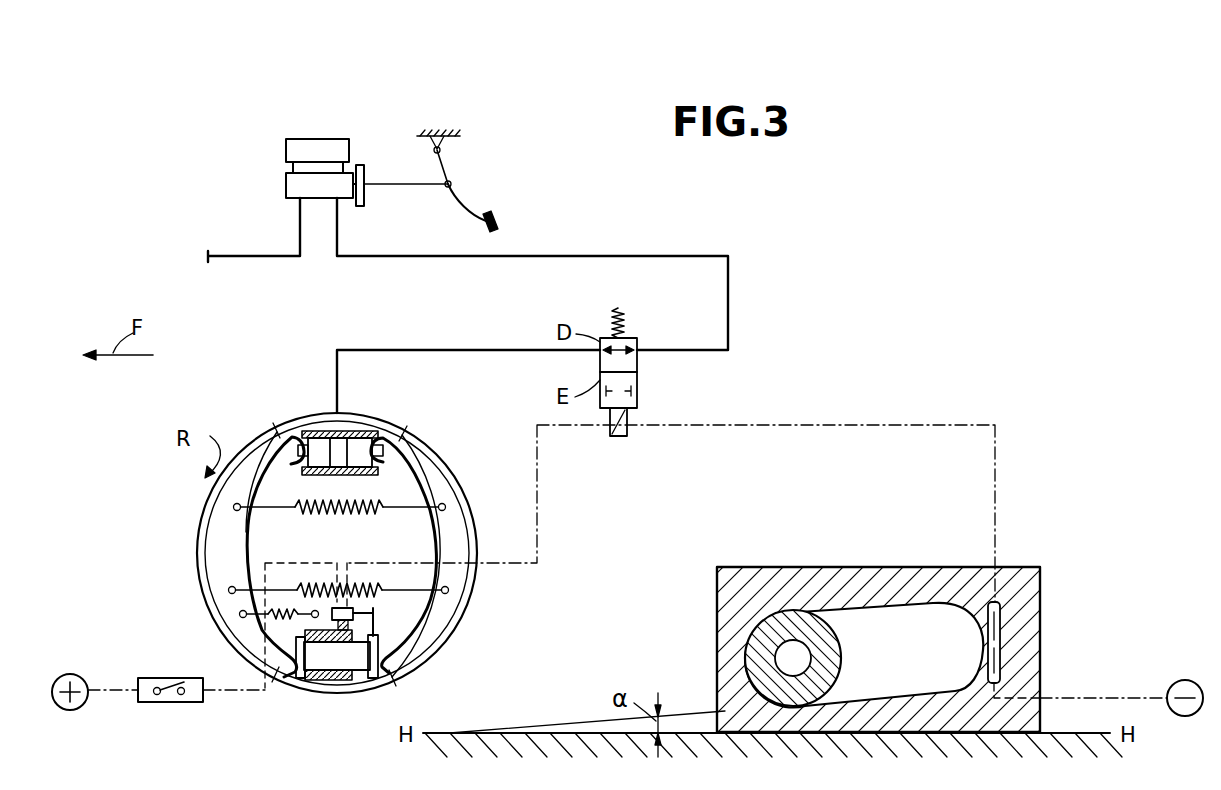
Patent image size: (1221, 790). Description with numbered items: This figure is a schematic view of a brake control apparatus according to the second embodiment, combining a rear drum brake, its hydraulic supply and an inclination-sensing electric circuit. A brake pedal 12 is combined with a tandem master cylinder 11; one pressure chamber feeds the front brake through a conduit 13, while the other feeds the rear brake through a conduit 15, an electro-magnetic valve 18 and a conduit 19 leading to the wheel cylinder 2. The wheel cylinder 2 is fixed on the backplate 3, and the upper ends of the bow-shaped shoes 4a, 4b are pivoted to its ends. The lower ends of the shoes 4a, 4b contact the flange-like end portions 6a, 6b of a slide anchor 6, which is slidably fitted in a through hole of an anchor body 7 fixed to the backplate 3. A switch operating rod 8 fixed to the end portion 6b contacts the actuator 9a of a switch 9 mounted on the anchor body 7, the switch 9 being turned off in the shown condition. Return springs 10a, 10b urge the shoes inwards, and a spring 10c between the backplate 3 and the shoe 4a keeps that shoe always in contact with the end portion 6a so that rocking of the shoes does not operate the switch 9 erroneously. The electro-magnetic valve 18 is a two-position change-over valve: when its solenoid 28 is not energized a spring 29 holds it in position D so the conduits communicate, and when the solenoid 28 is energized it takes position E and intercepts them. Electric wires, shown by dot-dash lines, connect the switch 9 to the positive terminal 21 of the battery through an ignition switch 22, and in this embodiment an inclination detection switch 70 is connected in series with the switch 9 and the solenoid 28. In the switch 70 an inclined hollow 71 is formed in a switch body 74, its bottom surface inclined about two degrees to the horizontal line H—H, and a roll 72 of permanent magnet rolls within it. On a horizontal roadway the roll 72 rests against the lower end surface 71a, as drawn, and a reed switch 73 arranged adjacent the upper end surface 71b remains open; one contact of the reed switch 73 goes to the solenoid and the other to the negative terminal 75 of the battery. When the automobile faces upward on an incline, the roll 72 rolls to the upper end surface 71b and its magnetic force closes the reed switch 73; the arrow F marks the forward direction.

The wheel cylinder 2 is at (322, 431).
The backplate 3 is at (388, 487).
The shoe 4a is at (222, 537).
The shoe 4b is at (444, 612).
The slide anchor 6 is at (343, 660).
The end portion 6a is at (296, 672).
The end portion 6b is at (378, 670).
The anchor body 7 is at (323, 677).
The switch operating rod 8 is at (378, 623).
The switch 9 is at (348, 607).
The actuator 9a is at (377, 588).
The return spring 10a is at (335, 513).
The return spring 10b is at (303, 589).
The spring 10c is at (262, 612).
The tandem master cylinder 11 is at (298, 131).
The brake pedal 12 is at (462, 207).
The conduit 13 is at (240, 256).
The conduit 15 is at (553, 256).
The electro-magnetic valve 18 is at (640, 339).
The conduit 19 is at (408, 350).
The positive terminal 21 is at (70, 674).
The ignition switch 22 is at (166, 677).
The solenoid 28 is at (619, 438).
The spring 29 is at (620, 310).
The inclination detection switch 70 is at (836, 566).
The inclined hollow 71 is at (893, 609).
The lower end surface 71a is at (756, 666).
The upper end surface 71b is at (976, 650).
The roll 72 is at (766, 642).
The reed switch 73 is at (1002, 618).
The switch body 74 is at (1015, 664).
The negative terminal 75 is at (1178, 681).